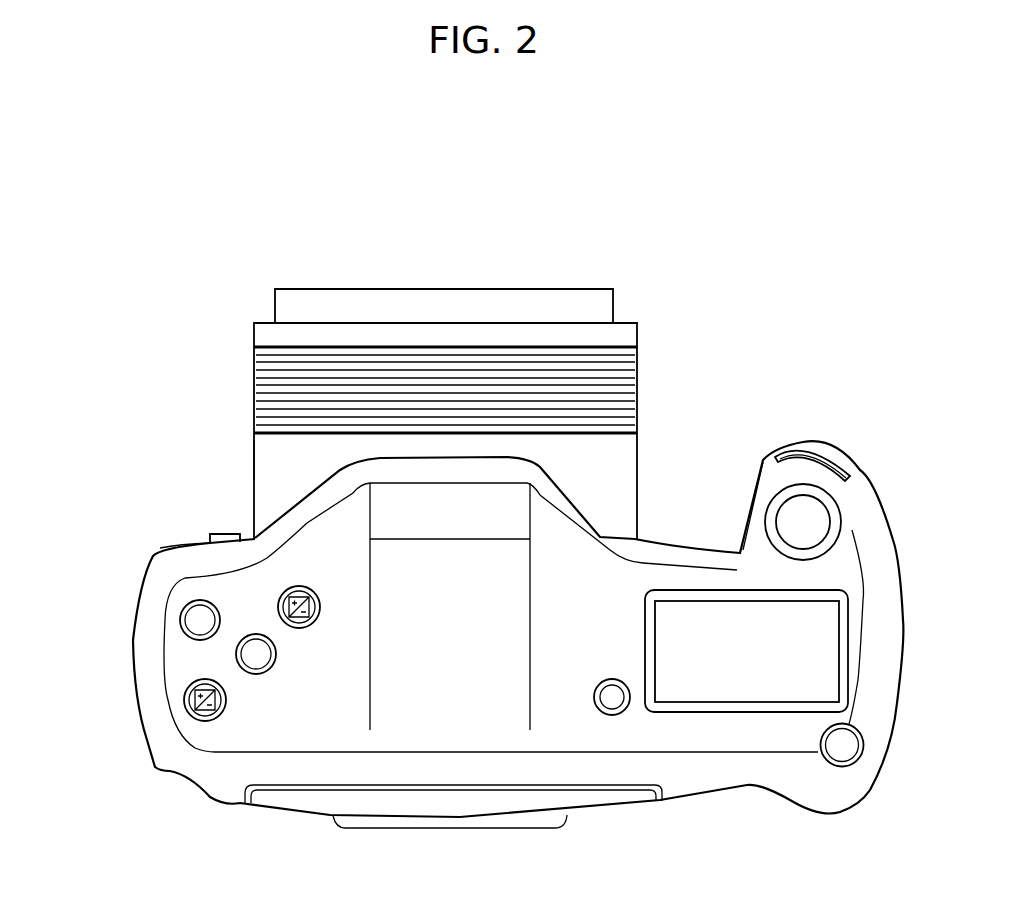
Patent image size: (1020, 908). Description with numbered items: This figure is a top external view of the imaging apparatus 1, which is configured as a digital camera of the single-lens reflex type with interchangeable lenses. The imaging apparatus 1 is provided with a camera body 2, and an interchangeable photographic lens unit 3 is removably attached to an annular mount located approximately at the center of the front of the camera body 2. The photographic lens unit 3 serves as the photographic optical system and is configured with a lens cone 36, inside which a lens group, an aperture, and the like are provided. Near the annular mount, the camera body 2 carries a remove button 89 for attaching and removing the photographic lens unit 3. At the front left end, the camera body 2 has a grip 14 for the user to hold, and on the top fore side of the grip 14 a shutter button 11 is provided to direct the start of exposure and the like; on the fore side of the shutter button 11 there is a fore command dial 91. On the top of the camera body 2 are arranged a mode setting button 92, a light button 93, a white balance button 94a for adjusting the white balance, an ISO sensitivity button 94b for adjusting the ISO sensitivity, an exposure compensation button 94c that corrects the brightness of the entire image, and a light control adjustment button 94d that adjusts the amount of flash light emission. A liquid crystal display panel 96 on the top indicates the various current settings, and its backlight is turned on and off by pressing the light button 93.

The imaging apparatus 1 is at (175, 304).
The camera body 2 is at (178, 546).
The photographic lens unit 3 is at (493, 279).
The shutter button 11 is at (813, 518).
The grip 14 is at (762, 482).
The lens cone 36 is at (254, 460).
The remove button 89 is at (222, 533).
The fore command dial 91 is at (815, 443).
The mode setting button 92 is at (841, 762).
The light button 93 is at (612, 715).
The white balance button 94a is at (180, 620).
The ISO sensitivity button 94b is at (236, 652).
The exposure compensation button 94c is at (185, 697).
The light control adjustment button 94d is at (299, 628).
The liquid crystal display panel 96 is at (693, 685).